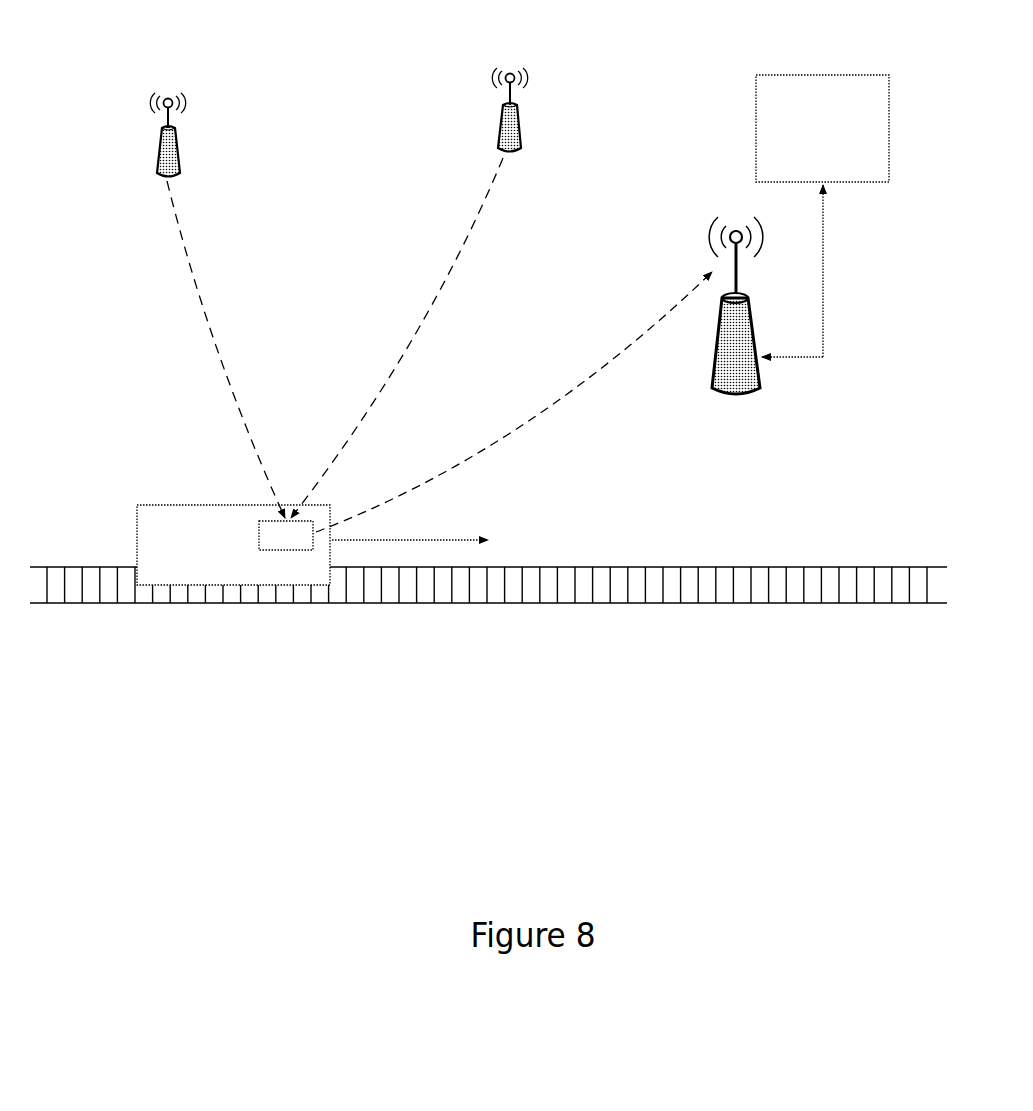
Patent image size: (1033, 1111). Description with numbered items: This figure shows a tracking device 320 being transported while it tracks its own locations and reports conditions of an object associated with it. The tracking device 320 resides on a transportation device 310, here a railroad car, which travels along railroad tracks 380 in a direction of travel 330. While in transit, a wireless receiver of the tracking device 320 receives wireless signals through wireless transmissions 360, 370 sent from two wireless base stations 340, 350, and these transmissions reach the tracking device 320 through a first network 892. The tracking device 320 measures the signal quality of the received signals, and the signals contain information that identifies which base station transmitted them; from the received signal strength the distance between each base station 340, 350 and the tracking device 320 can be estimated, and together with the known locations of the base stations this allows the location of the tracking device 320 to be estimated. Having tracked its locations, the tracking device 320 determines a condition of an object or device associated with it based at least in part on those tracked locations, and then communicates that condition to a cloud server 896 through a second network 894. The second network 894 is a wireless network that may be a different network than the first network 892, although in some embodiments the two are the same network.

The transportation device 310 is at (184, 556).
The tracking device 320 is at (284, 553).
The direction of travel 330 is at (472, 531).
The wireless base station 340 is at (204, 100).
The wireless base station 350 is at (548, 78).
The wireless transmission 360 is at (239, 349).
The wireless transmission 370 is at (397, 338).
The railroad tracks 380 is at (663, 590).
The first network 892 is at (335, 338).
The second network 894 is at (539, 374).
The cloud server 896 is at (801, 161).